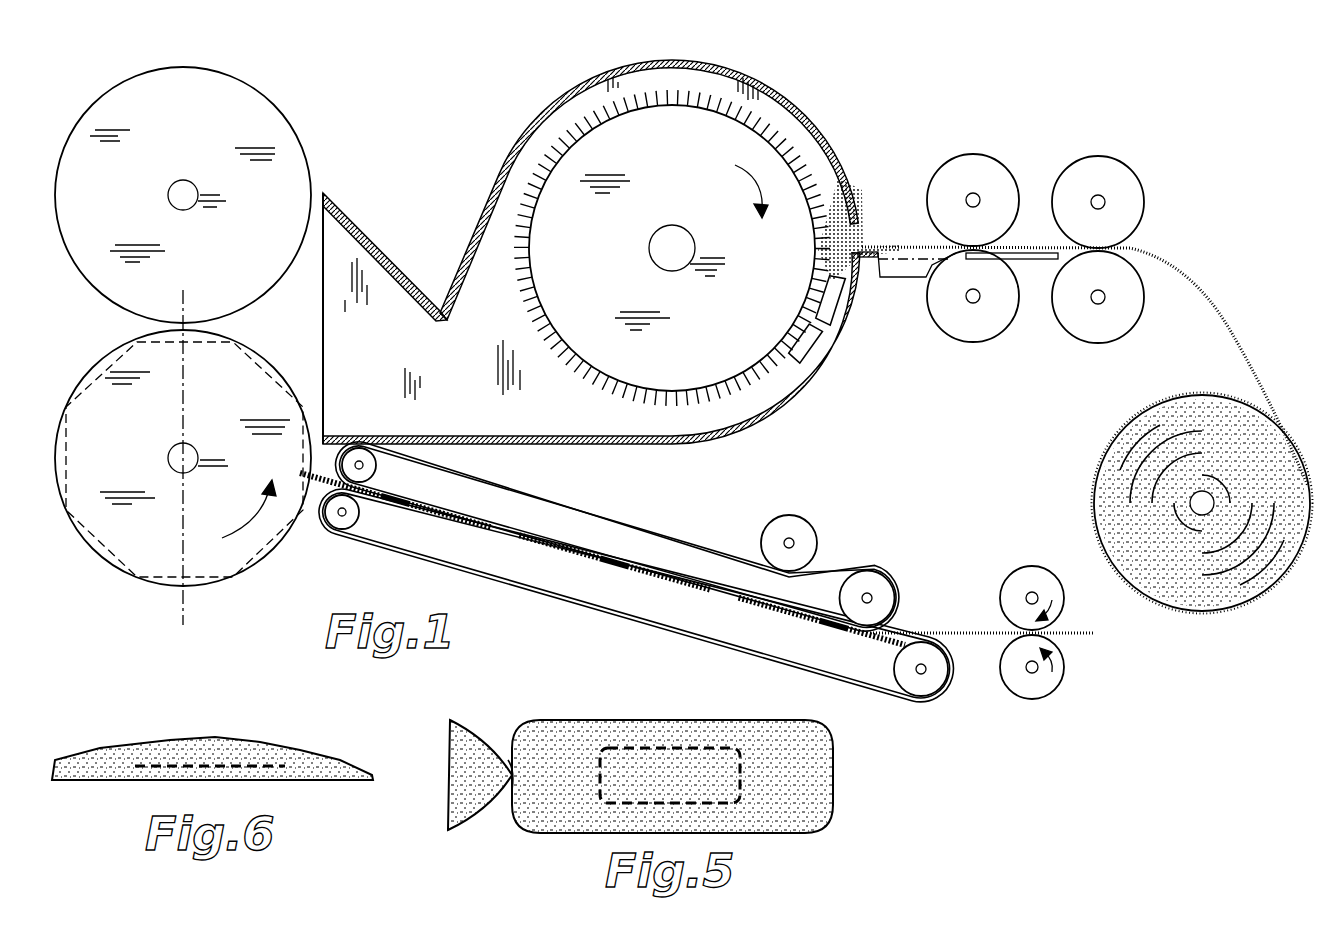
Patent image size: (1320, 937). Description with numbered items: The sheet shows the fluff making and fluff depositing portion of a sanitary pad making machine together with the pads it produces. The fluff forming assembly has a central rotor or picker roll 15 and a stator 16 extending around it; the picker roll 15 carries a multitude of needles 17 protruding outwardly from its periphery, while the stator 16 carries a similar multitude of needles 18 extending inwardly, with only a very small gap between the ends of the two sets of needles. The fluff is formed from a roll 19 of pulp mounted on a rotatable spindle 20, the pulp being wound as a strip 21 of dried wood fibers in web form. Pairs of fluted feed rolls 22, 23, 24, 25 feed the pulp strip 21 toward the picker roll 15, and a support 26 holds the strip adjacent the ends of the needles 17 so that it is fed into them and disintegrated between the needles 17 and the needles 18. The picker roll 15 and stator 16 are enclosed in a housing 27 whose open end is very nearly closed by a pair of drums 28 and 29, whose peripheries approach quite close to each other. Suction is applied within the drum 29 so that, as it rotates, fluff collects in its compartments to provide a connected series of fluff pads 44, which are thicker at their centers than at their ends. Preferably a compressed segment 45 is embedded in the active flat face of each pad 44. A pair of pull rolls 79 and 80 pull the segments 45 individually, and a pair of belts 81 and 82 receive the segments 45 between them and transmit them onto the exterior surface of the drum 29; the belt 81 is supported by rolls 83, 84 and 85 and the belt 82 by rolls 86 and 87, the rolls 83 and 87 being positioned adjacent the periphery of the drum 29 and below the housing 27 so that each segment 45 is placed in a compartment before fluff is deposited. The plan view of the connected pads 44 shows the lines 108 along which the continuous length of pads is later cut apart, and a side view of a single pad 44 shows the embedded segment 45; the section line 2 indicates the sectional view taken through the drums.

In FIG. 1, the section line 2 is at (160, 305).
In FIG. 1, the picker roll 15 is at (684, 199).
In FIG. 1, the stator 16 is at (822, 346).
In FIG. 1, the needles 17 is at (598, 381).
In FIG. 1, the needles 18 is at (808, 356).
In FIG. 1, the roll of pulp 19 is at (1114, 446).
In FIG. 1, the spindle 20 is at (1200, 490).
In FIG. 1, the pulp strip 21 is at (1204, 310).
In FIG. 1, the fluted feed roll 22 is at (1116, 172).
In FIG. 1, the fluted feed roll 23 is at (1110, 328).
In FIG. 1, the fluted feed roll 24 is at (985, 170).
In FIG. 1, the fluted feed roll 25 is at (1002, 328).
In FIG. 1, the support 26 is at (906, 265).
In FIG. 1, the housing 27 is at (556, 106).
In FIG. 1, the drum 28 is at (280, 114).
In FIG. 1, the drum 29 is at (240, 547).
In FIG. 6, the fluff pad 44 is at (146, 746).
In FIG. 5, the fluff pad 44 is at (836, 772).
In FIG. 6, the compressed segment 45 is at (258, 766).
In FIG. 5, the compressed segment 45 is at (702, 748).
In FIG. 1, the pull roll 79 is at (1032, 578).
In FIG. 1, the pull roll 80 is at (1052, 686).
In FIG. 1, the belt 81 is at (628, 520).
In FIG. 1, the belt 82 is at (608, 616).
In FIG. 1, the supporting roll 83 is at (378, 470).
In FIG. 1, the supporting roll 84 is at (886, 594).
In FIG. 1, the supporting roll 85 is at (812, 540).
In FIG. 1, the supporting roll 86 is at (928, 690).
In FIG. 1, the supporting roll 87 is at (362, 518).
In FIG. 5, the lines 108 is at (518, 746).